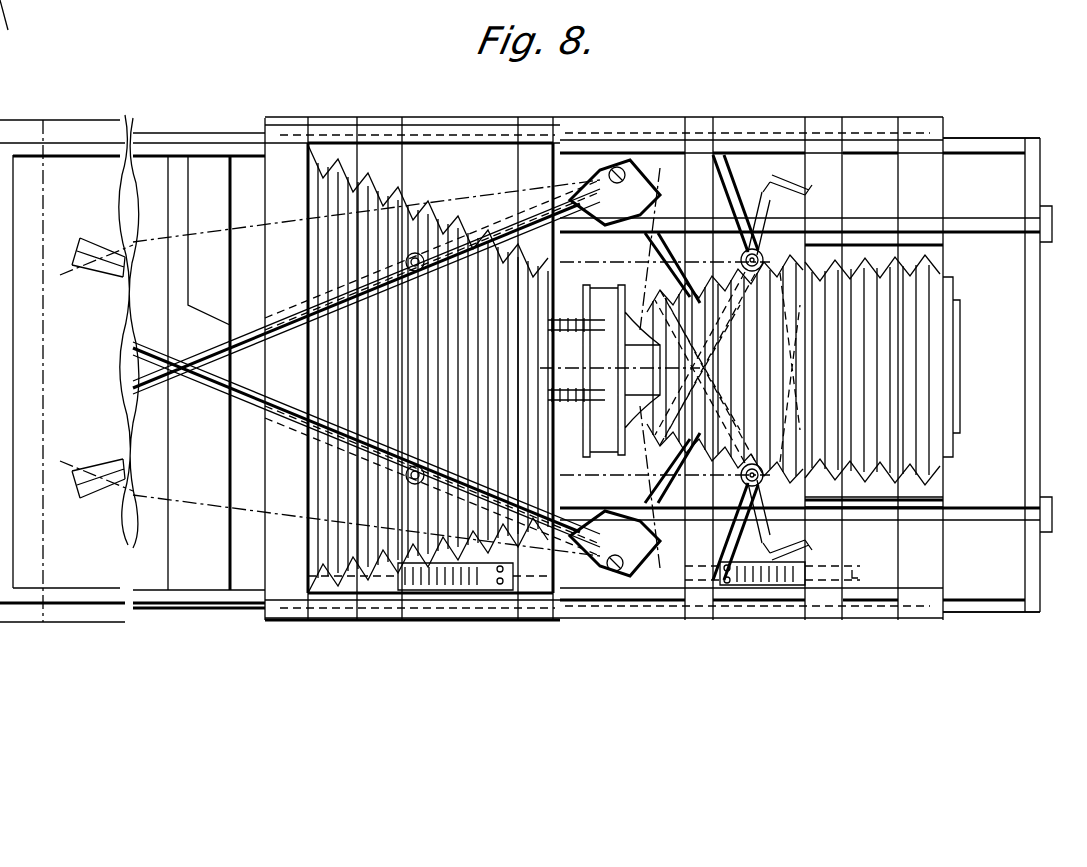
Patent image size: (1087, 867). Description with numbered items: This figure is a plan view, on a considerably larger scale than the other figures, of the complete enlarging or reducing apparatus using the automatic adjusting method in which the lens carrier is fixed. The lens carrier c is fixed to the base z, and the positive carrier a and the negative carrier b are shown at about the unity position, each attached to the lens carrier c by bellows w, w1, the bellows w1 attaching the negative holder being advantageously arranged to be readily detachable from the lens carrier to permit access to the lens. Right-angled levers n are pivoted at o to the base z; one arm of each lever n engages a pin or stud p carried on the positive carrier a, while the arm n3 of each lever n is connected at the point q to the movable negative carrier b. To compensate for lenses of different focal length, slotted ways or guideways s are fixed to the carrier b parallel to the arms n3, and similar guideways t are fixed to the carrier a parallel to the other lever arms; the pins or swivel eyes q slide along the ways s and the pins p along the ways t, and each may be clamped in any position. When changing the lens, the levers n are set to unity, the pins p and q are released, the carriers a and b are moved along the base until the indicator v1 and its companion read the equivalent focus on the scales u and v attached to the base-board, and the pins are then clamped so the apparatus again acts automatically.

The positive carrier a is at (270, 276).
The negative carrier b is at (935, 290).
The lens carrier c is at (575, 272).
The right-angled levers n is at (147, 350).
The arm of lever n3 is at (798, 190).
The pivot o is at (620, 166).
The pin or stud p is at (416, 253).
The pin or swivel eye q is at (762, 256).
The slotted ways or guideways s is at (735, 205).
The slotted ways or guideways t is at (490, 225).
The scale u is at (775, 585).
The scale v is at (420, 585).
The indicator v1 is at (505, 592).
The bellows w is at (465, 210).
The bellows w1 is at (742, 630).
The base z is at (1035, 346).